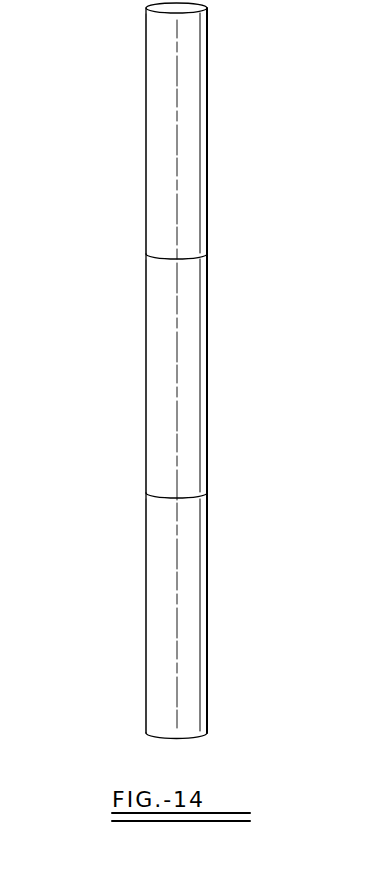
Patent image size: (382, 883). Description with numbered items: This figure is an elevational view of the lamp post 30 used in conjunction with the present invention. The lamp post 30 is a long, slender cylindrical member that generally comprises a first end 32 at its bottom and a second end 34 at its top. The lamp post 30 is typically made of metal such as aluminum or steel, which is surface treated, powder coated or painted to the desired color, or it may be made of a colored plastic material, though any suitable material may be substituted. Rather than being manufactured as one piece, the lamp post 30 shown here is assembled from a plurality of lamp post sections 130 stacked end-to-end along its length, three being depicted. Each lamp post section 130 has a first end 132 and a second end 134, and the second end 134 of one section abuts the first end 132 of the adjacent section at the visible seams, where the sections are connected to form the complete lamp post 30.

The lamp post 30 is at (143, 297).
The first end 32 is at (153, 717).
The second end 34 is at (150, 27).
The lamp post section 130 is at (207, 132).
The first end 132 is at (207, 234).
The second end 134 is at (207, 22).